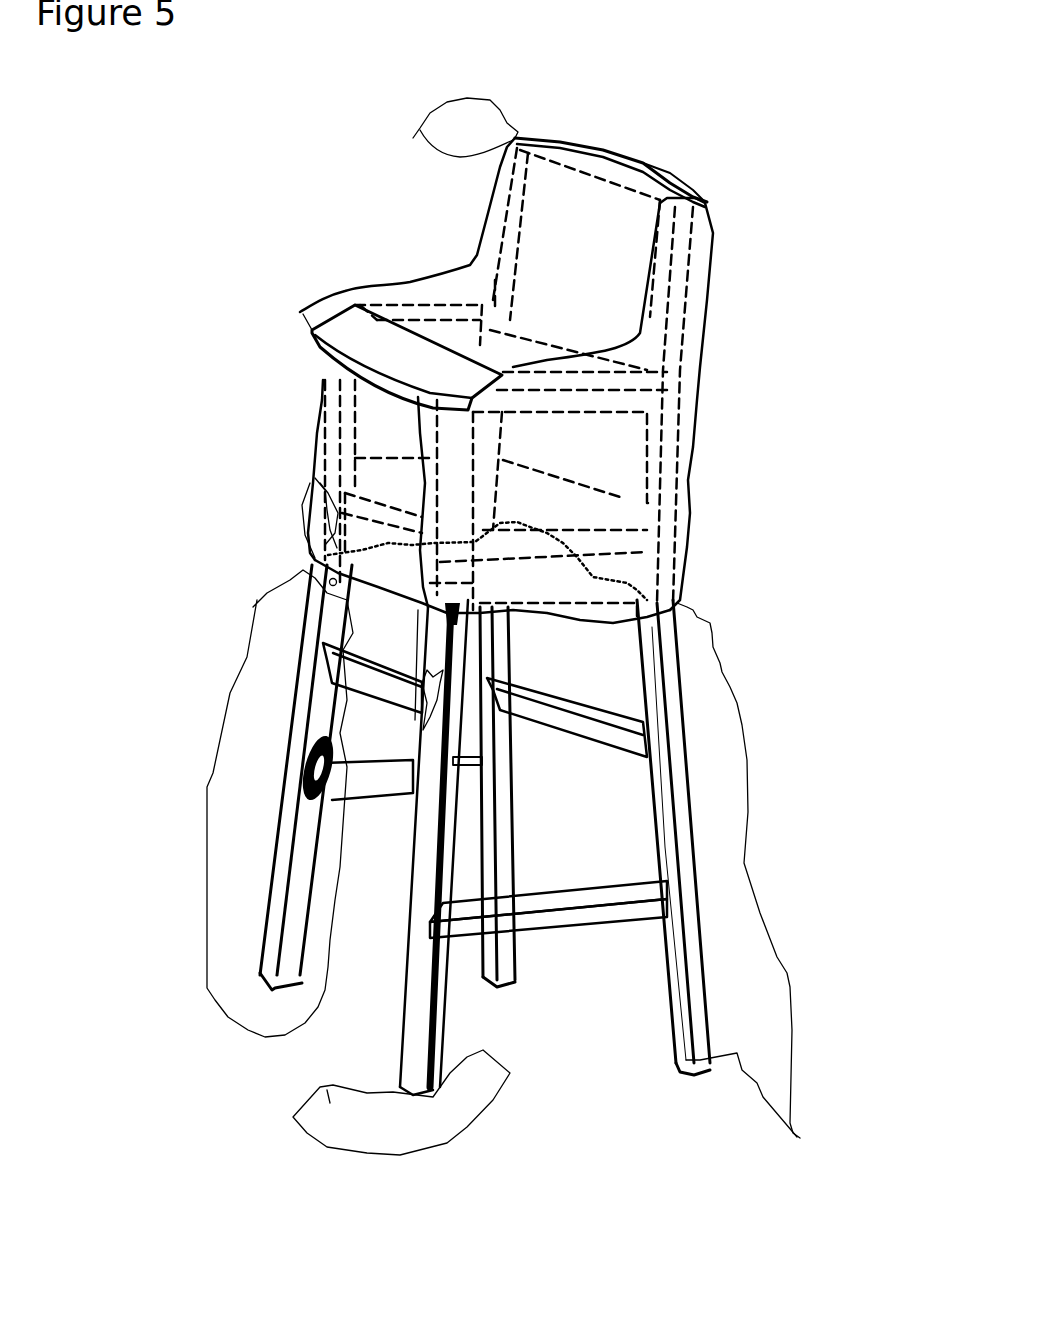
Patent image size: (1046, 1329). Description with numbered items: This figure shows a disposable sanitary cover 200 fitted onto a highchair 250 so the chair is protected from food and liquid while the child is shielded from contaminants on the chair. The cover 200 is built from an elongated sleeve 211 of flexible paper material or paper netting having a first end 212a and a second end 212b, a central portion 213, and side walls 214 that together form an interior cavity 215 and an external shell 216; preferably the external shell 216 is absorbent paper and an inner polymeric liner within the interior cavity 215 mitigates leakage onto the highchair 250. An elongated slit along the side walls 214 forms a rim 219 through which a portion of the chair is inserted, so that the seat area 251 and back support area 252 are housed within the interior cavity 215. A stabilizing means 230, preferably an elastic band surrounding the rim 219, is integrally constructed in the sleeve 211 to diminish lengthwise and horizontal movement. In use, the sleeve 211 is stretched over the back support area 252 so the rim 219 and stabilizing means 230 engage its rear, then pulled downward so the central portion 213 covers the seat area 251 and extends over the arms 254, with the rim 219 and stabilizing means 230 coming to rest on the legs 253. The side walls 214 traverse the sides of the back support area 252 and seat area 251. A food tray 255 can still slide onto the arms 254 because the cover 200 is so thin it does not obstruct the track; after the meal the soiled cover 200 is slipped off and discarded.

The disposable sanitary cover 200 is at (310, 172).
The elongated sleeve 211 is at (711, 222).
The first end 212a is at (623, 575).
The second end 212b is at (323, 643).
The central portion 213 is at (527, 253).
The side walls 214 is at (610, 608).
The interior cavity 215 is at (315, 522).
The external shell 216 is at (613, 148).
The rim 219 is at (573, 550).
The stabilizing means 230 is at (593, 577).
The highchair 250 is at (685, 668).
The seat area 251 is at (402, 470).
The back support area 252 is at (505, 175).
The legs 253 is at (260, 603).
The arms 254 is at (402, 320).
The food tray 255 is at (300, 312).